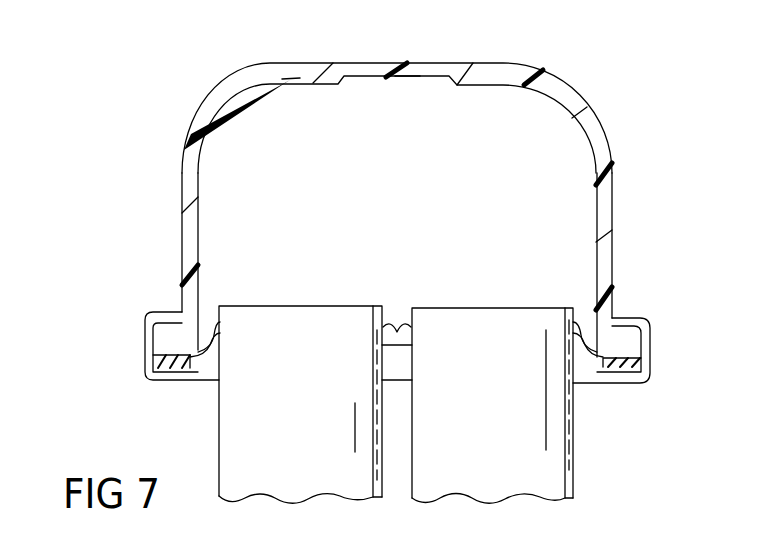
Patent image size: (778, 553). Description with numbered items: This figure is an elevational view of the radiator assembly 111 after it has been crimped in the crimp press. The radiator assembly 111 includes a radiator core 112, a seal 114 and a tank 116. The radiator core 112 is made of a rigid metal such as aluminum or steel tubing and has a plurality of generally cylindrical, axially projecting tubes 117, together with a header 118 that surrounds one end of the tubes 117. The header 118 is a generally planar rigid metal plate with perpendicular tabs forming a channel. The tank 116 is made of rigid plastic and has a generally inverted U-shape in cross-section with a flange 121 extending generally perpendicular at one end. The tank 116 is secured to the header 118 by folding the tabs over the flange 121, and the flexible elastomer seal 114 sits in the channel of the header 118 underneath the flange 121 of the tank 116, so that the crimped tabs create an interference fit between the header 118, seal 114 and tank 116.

The radiator assembly 111 is at (437, 227).
The radiator core 112 is at (574, 430).
The seal 114 is at (642, 362).
The tank 116 is at (290, 63).
The tubes 117 is at (283, 481).
The header 118 is at (627, 381).
The flange 121 is at (627, 324).